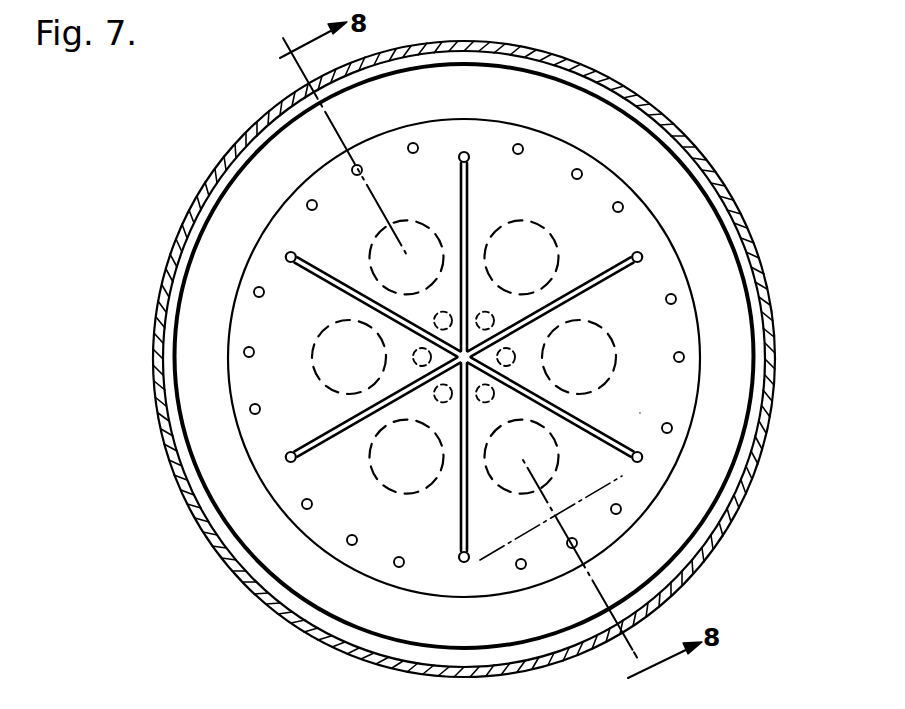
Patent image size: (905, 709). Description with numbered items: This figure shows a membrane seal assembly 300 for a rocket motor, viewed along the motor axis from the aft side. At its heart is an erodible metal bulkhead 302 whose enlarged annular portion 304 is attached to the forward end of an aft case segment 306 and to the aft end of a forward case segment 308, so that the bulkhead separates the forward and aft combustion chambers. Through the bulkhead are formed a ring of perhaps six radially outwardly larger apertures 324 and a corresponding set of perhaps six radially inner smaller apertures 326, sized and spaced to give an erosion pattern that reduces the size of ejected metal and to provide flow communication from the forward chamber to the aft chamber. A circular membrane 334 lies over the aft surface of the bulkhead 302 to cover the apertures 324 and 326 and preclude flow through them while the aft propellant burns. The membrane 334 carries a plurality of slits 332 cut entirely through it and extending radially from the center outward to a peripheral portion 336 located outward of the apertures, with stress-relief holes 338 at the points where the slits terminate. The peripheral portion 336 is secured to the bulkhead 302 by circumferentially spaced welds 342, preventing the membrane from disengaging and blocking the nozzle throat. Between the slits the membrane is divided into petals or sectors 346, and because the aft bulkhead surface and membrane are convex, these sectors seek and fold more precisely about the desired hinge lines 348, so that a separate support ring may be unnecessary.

The membrane seal assembly 300 is at (644, 98).
The erodible metal bulkhead 302 is at (720, 246).
The enlarged annular portion 304 is at (432, 708).
The aft case segment 306 is at (774, 360).
The forward case segment 308 is at (326, 708).
The radially outwardly larger apertures 324 is at (420, 220).
The radially inner smaller apertures 326 is at (490, 315).
The slits 332 is at (602, 275).
The circular membrane 334 is at (640, 413).
The peripheral portion 336 is at (273, 242).
The stress-relief holes 338 is at (468, 150).
The welds 342 is at (316, 202).
The petals or sectors 346 is at (533, 512).
The hinge lines 348 is at (626, 468).